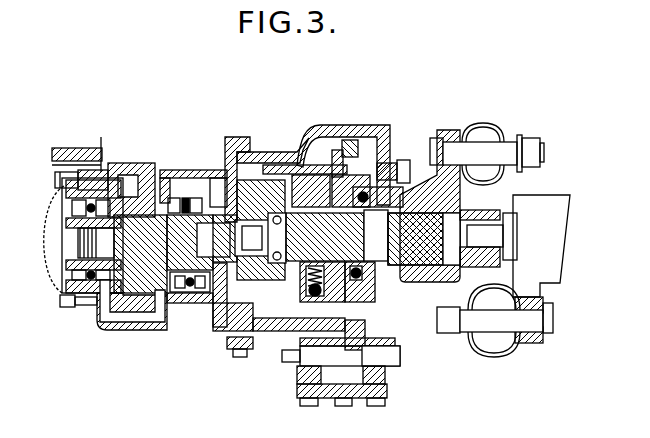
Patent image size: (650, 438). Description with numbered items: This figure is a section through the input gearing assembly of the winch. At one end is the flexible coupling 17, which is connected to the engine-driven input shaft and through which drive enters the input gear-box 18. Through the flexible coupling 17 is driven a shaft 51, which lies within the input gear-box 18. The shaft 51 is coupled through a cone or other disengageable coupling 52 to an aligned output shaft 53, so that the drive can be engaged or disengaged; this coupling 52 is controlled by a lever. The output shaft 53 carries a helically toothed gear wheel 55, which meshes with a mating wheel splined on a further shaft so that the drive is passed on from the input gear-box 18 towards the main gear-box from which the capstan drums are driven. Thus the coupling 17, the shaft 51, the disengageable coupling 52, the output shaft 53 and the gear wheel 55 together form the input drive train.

The flexible coupling 17 is at (483, 150).
The input gear-box 18 is at (335, 127).
The shaft 51 is at (427, 250).
The cone or other disengageable coupling 52 is at (272, 180).
The output shaft 53 is at (207, 297).
The helically toothed gear wheel 55 is at (137, 177).